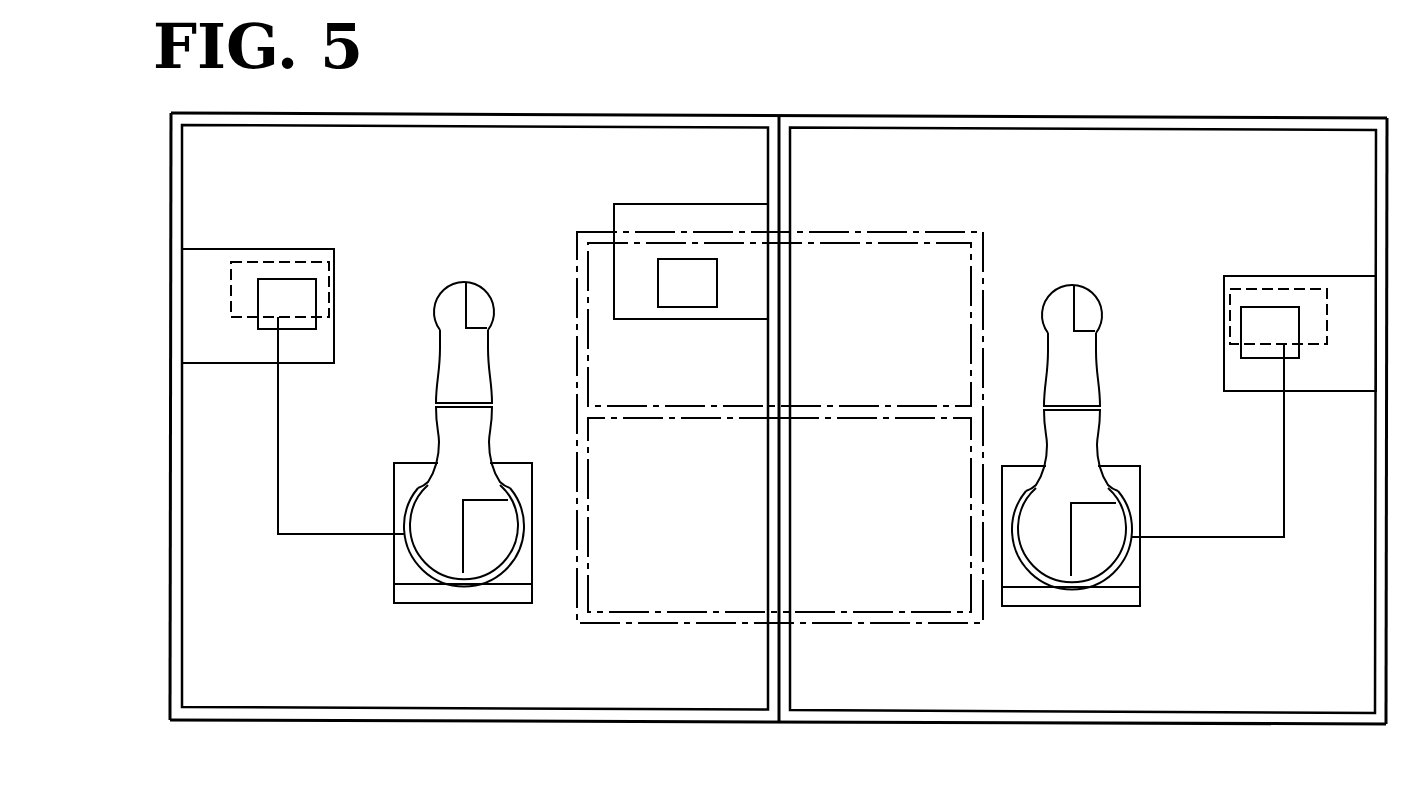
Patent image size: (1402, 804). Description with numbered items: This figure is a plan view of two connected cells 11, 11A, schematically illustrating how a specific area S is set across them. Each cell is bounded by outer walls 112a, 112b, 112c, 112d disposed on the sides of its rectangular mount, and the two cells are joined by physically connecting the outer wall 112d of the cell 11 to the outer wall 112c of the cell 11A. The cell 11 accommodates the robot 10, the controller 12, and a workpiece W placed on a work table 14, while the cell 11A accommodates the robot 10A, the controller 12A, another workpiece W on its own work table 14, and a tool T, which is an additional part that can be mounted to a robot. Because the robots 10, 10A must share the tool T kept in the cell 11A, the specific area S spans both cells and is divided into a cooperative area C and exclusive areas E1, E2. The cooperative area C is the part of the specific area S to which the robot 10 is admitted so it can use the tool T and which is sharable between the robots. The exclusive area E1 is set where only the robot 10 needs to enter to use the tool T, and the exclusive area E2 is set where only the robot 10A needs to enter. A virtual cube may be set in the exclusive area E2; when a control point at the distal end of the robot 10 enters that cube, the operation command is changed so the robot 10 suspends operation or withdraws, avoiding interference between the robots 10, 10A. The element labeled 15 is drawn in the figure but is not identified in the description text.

The cell 11 is at (950, 113).
The cell 11A is at (597, 113).
The robot 10 is at (1071, 278).
The robot 10A is at (466, 276).
The controller 12 is at (1248, 350).
The controller 12A is at (313, 325).
The work table 14 is at (228, 348).
The transfer unit 15 is at (641, 216).
The tool T is at (689, 295).
The specific area S is at (863, 237).
The cooperative area C is at (940, 265).
The exclusive area E1 is at (916, 600).
The exclusive area E2 is at (631, 600).
The workpiece W is at (255, 262).
The outer wall 112a is at (477, 121).
The outer wall 112b is at (285, 715).
The outer wall 112c is at (767, 667).
The outer wall 112d is at (181, 575).